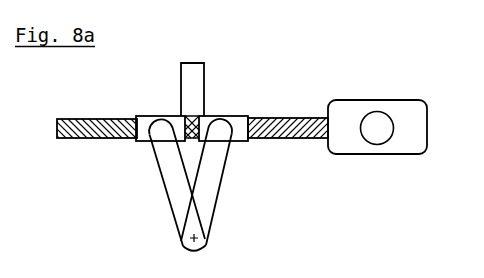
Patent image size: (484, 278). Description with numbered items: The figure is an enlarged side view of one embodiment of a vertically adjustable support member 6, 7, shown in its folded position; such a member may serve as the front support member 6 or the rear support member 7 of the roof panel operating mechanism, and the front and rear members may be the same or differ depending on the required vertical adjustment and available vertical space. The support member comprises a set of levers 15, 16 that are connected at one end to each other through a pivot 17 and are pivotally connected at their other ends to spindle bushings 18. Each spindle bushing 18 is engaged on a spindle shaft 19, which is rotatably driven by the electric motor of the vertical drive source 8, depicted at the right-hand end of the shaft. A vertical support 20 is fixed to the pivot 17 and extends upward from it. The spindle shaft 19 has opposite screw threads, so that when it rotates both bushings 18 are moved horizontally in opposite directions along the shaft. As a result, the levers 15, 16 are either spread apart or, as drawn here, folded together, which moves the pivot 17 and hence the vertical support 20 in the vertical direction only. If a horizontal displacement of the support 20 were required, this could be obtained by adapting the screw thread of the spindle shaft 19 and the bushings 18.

The front support member 6 is at (287, 52).
The rear support member 7 is at (289, 50).
The vertical drive source 8 is at (412, 110).
The lever 15 is at (212, 192).
The lever 16 is at (172, 192).
The pivot 17 is at (200, 245).
The spindle bushing 18 is at (144, 122).
The spindle shaft 19 is at (310, 117).
The vertical support 20 is at (195, 72).